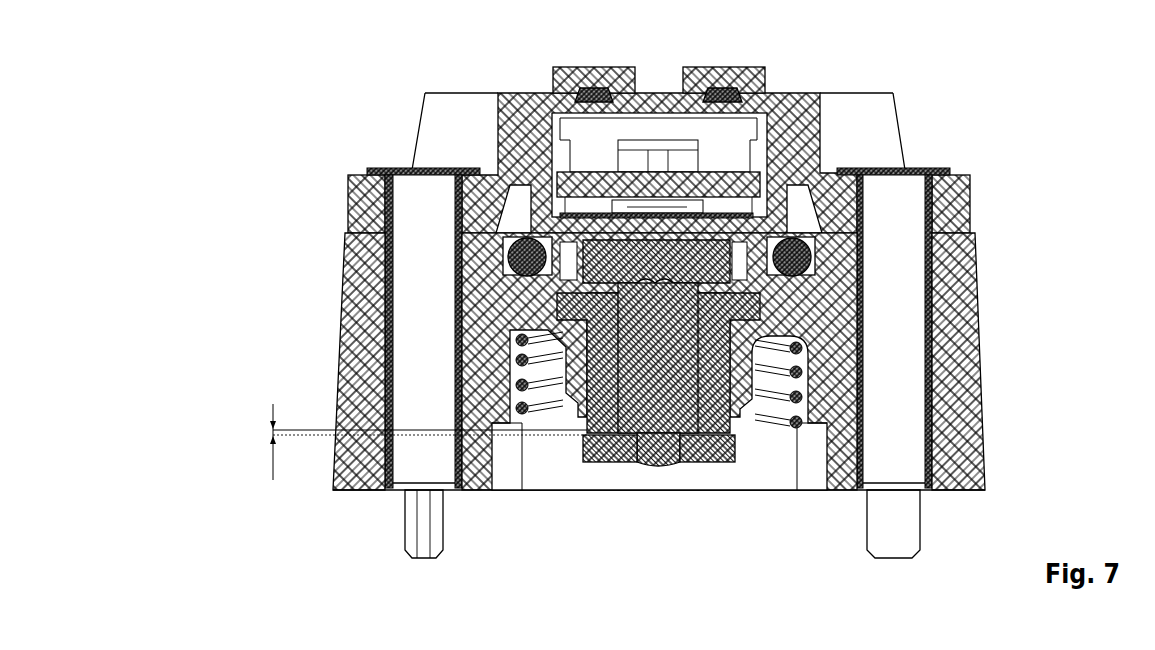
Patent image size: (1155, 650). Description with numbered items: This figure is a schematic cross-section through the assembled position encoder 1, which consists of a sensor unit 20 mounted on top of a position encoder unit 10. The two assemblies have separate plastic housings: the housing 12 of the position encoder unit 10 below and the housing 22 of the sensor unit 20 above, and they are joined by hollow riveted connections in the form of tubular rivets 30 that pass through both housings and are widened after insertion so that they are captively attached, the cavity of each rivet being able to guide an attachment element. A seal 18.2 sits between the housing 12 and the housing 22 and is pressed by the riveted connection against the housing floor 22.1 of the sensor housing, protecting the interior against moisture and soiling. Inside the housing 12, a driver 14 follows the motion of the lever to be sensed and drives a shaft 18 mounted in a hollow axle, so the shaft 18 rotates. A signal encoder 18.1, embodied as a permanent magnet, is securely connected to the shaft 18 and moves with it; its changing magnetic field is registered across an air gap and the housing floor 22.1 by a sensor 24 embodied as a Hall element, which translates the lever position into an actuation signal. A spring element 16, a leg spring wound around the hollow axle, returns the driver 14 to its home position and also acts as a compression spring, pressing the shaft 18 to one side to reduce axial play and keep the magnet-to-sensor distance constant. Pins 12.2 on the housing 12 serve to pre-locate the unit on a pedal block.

The position encoder 1 is at (222, 69).
The position encoder unit 10 is at (613, 290).
The housing 12 is at (342, 352).
The pins 12.2 is at (420, 530).
The driver 14 is at (606, 453).
The spring element 16 is at (530, 413).
The shaft 18 is at (660, 465).
The signal encoder 18.1 is at (680, 250).
The seal 18.2 is at (500, 262).
The sensor unit 20 is at (409, 104).
The housing 22 is at (372, 197).
The housing floor 22.1 is at (795, 212).
The sensor 24 is at (668, 235).
The tubular rivet 30 is at (410, 223).